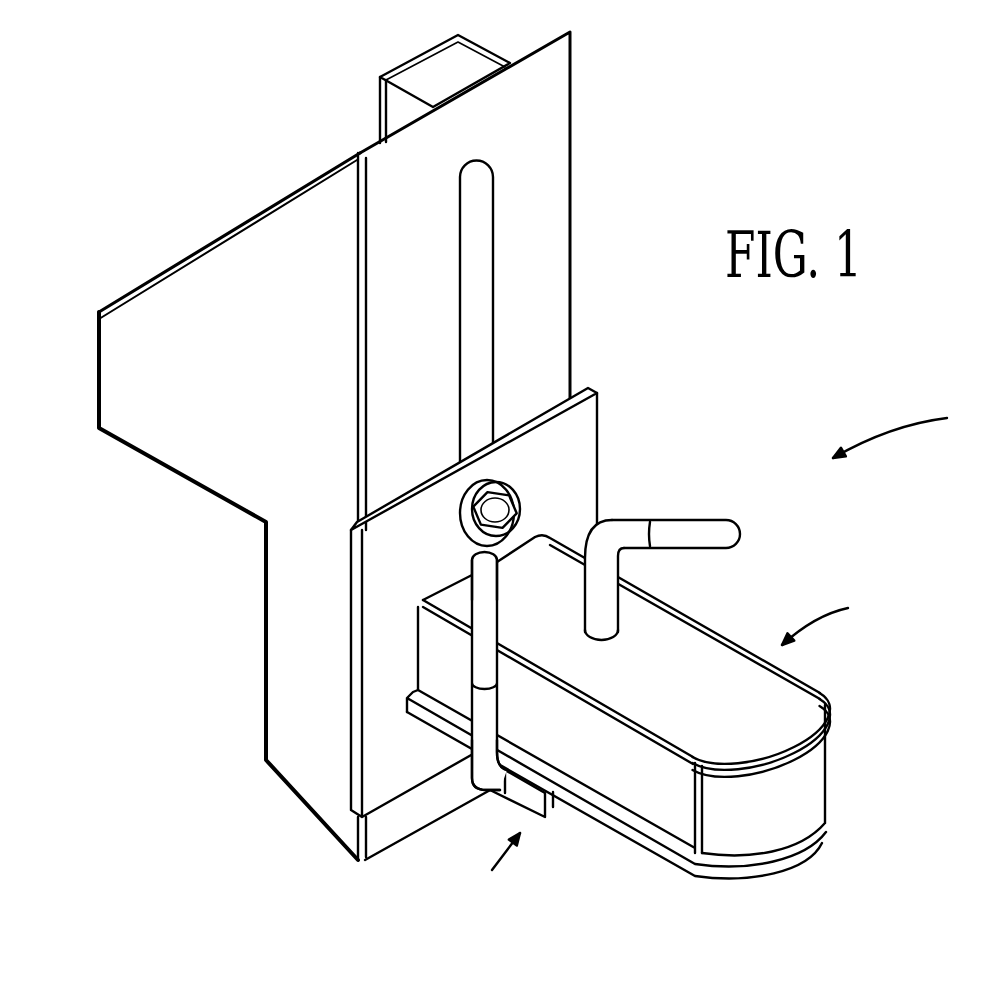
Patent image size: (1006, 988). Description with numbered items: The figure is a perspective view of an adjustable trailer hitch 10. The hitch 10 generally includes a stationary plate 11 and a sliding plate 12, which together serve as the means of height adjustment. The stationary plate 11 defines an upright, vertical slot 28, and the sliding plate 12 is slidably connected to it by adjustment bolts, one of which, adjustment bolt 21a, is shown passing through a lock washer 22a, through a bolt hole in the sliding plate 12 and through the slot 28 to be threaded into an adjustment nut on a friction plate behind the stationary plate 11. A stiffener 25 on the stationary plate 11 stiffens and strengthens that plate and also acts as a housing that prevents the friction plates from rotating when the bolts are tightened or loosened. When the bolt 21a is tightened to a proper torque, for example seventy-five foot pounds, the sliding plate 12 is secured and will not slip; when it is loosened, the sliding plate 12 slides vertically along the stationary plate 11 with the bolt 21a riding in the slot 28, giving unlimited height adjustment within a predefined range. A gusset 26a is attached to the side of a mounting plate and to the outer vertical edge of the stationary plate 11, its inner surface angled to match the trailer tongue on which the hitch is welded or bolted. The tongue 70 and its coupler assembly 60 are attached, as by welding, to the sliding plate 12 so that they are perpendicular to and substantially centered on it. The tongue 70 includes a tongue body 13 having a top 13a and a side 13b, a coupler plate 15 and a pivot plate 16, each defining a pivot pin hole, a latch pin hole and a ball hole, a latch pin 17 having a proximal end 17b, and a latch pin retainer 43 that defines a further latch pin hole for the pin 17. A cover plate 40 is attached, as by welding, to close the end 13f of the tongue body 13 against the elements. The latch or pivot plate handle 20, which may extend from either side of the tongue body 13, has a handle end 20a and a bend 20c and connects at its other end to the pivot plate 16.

The adjustable trailer hitch 10 is at (906, 432).
The stationary plate 11 is at (540, 90).
The sliding plate 12 is at (570, 473).
The tongue body 13 is at (688, 665).
The top of tongue body 13a is at (558, 682).
The side of tongue body 13b is at (560, 730).
The end of tongue body 13f is at (823, 705).
The coupler plate 15 is at (818, 838).
The pivot plate 16 is at (780, 860).
The latch pin 17 is at (653, 523).
The proximal end of latch pin 17b is at (707, 528).
The latch or pivot plate handle 20 is at (478, 607).
The handle end 20a is at (480, 588).
The bend of handle 20c is at (482, 762).
The adjustment bolt 21a is at (505, 498).
The lock washer 22a is at (512, 480).
The stiffener 25 is at (397, 103).
The gusset 26a is at (229, 506).
The vertical slot 28 is at (478, 220).
The cover plate 40 is at (763, 780).
The latch pin retainer 43 is at (527, 795).
The coupler assembly 60 is at (498, 867).
The tongue 70 is at (832, 620).